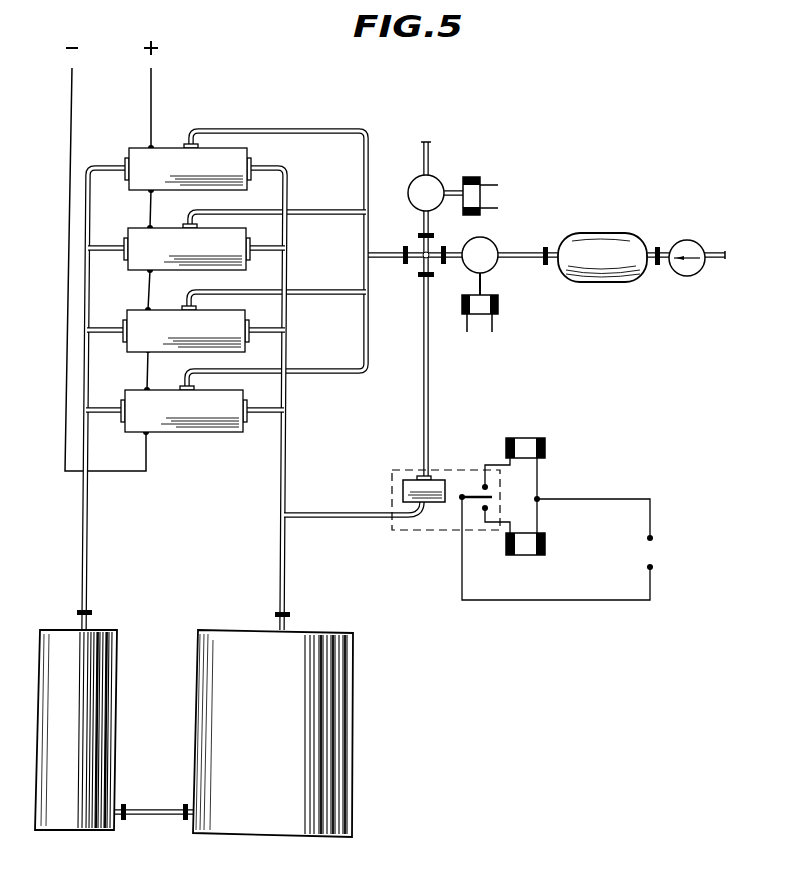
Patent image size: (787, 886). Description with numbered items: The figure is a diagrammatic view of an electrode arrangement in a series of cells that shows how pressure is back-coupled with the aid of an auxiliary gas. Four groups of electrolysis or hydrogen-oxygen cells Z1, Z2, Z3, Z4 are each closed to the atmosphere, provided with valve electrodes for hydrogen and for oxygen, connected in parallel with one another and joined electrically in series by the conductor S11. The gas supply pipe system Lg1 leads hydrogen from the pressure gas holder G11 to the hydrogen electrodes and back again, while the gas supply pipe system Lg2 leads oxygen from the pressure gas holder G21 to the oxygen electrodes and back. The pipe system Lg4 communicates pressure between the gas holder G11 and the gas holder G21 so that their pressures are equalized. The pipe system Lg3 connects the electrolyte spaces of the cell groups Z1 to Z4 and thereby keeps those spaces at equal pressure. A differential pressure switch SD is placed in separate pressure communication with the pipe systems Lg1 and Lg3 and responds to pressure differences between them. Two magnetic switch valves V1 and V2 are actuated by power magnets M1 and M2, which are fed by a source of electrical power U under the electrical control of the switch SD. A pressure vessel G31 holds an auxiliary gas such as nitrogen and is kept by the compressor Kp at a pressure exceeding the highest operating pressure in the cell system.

The conductor S11 is at (155, 92).
The group of electrolysis cells Z1 is at (129, 192).
The group of electrolysis cells Z2 is at (128, 272).
The group of electrolysis cells Z3 is at (127, 354).
The group of electrolysis cells Z4 is at (125, 434).
The gas supply pipe system Lg1 is at (287, 557).
The gas supply pipe system Lg2 is at (87, 547).
The pipe system Lg3 is at (369, 330).
The pipe system Lg4 is at (157, 820).
The magnetic switch valve V1 is at (413, 182).
The magnetic switch valve V2 is at (494, 243).
The power magnet M1 is at (480, 182).
The power magnet M2 is at (498, 306).
The pressure vessel G31 is at (578, 283).
The compressor Kp is at (700, 244).
The differential pressure switch SD is at (437, 533).
The source of electrical power U is at (567, 529).
The pressure gas holder G21 is at (108, 672).
The pressure gas holder G11 is at (340, 677).